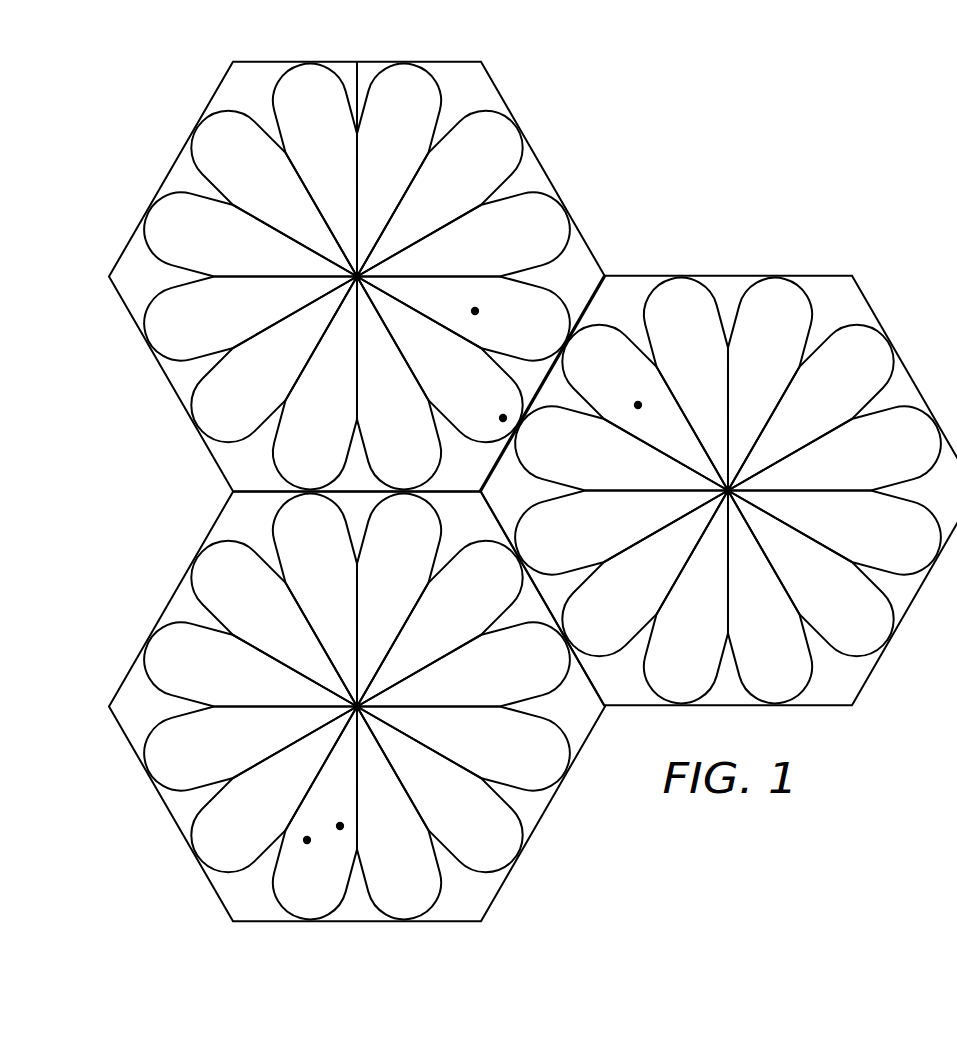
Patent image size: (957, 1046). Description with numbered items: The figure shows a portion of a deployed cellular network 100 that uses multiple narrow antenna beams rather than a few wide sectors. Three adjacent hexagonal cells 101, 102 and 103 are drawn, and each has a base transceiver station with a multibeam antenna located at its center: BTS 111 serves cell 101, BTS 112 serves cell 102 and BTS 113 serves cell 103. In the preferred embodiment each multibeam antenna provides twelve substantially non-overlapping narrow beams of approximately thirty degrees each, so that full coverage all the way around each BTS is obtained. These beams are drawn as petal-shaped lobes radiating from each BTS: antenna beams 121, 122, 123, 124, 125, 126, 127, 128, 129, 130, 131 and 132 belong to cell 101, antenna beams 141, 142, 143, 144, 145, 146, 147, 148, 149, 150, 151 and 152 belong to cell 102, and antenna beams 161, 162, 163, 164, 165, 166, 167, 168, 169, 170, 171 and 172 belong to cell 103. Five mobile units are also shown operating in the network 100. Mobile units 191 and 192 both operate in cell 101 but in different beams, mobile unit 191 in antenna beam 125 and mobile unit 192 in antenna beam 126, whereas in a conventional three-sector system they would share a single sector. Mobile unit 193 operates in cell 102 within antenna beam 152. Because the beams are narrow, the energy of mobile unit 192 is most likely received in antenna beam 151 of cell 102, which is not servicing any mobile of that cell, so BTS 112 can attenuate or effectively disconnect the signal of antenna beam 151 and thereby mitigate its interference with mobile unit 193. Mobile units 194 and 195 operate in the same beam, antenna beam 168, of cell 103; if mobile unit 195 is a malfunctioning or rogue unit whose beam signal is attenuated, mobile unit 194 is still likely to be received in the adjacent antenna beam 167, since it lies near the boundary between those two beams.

The cellular network 100 is at (677, 169).
The cell 101 is at (543, 164).
The cell 102 is at (727, 276).
The cell 103 is at (178, 828).
The base transceiver station 111 is at (357, 276).
The base transceiver station 112 is at (728, 490).
The base transceiver station 113 is at (357, 706).
The antenna beam 121 is at (295, 136).
The antenna beam 122 is at (380, 136).
The antenna beam 123 is at (451, 178).
The antenna beam 124 is at (493, 254).
The antenna beam 125 is at (494, 338).
The antenna beam 126 is at (452, 410).
The antenna beam 127 is at (380, 452).
The antenna beam 128 is at (295, 452).
The antenna beam 129 is at (223, 410).
The antenna beam 130 is at (181, 338).
The antenna beam 131 is at (180, 254).
The antenna beam 132 is at (223, 178).
The antenna beam 141 is at (664, 348).
The antenna beam 142 is at (748, 348).
The antenna beam 143 is at (820, 391).
The antenna beam 144 is at (862, 466).
The antenna beam 145 is at (862, 548).
The antenna beam 146 is at (820, 622).
The antenna beam 147 is at (748, 665).
The antenna beam 148 is at (664, 665).
The antenna beam 149 is at (593, 622).
The antenna beam 150 is at (551, 548).
The antenna beam 151 is at (551, 466).
The antenna beam 152 is at (593, 391).
The antenna beam 161 is at (295, 566).
The antenna beam 162 is at (380, 566).
The antenna beam 163 is at (450, 608).
The antenna beam 164 is at (493, 683).
The antenna beam 165 is at (493, 768).
The antenna beam 166 is at (450, 840).
The antenna beam 167 is at (379, 881).
The antenna beam 168 is at (295, 881).
The antenna beam 169 is at (223, 840).
The antenna beam 170 is at (181, 768).
The antenna beam 171 is at (180, 683).
The antenna beam 172 is at (223, 608).
The mobile unit 191 is at (475, 311).
The mobile unit 192 is at (503, 418).
The mobile unit 193 is at (638, 405).
The mobile unit 194 is at (340, 826).
The mobile unit 195 is at (307, 840).